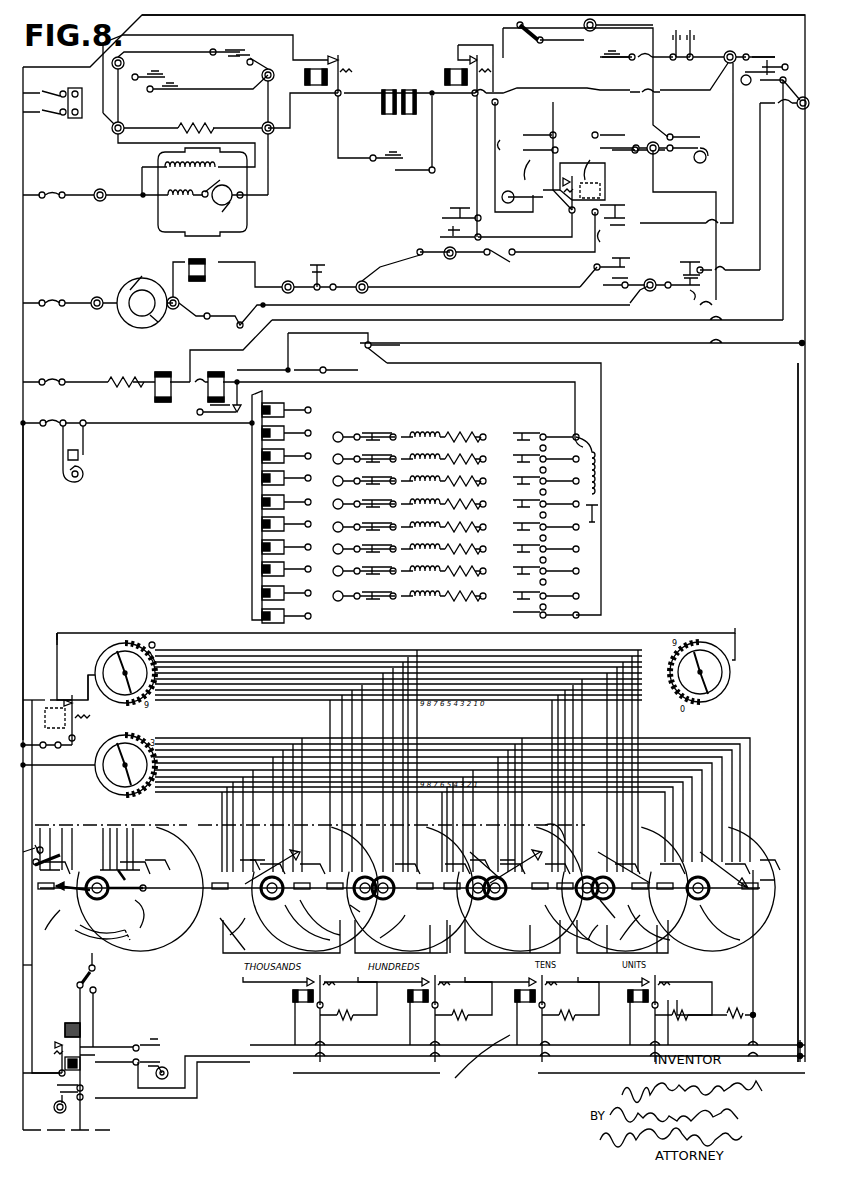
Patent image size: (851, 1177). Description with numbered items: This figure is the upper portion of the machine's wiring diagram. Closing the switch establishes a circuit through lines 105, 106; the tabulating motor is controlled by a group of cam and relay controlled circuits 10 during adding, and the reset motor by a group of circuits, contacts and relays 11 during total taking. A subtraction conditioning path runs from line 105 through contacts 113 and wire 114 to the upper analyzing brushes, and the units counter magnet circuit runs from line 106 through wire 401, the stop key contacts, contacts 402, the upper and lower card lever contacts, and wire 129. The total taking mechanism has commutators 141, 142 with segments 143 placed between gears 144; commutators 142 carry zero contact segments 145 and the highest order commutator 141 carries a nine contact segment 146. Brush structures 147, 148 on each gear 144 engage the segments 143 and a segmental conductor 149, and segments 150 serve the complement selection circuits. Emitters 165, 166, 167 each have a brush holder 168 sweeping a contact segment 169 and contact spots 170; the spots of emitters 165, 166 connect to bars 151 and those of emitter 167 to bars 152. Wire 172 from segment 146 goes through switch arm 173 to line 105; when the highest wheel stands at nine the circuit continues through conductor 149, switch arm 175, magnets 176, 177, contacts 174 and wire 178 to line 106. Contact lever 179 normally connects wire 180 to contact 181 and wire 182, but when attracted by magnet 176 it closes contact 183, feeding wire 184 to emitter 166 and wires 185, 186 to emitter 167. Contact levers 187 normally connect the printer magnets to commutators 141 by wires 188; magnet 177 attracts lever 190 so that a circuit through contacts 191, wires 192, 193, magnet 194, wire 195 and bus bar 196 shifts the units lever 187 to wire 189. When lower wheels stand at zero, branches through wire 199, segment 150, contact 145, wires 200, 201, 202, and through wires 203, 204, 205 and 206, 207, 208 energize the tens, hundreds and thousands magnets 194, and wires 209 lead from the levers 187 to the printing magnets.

The cam and relay controlled circuits 10 is at (435, 113).
The circuits, contacts and relays 11 is at (376, 276).
The line 105 is at (25, 585).
The line 106 is at (352, 10).
The contacts 113 is at (84, 478).
The wire 114 is at (143, 423).
The wire 129 is at (798, 520).
The commutators 141 is at (400, 908).
The commutators 142 is at (758, 933).
The segments 143 is at (145, 868).
The gears 144 is at (162, 940).
The zero contact segments 145 is at (653, 916).
The nine contact segment 146 is at (47, 918).
The brush structure 147 is at (74, 890).
The brush structure 148 is at (298, 876).
The segmental conductor 149 is at (715, 925).
The segment 150 is at (762, 896).
The bars 151 is at (240, 676).
The bars 152 is at (212, 752).
The emitter 165 is at (122, 642).
The emitter 166 is at (730, 642).
The emitter 167 is at (122, 745).
The brush holder 168 is at (150, 652).
The contact segment 169 is at (106, 652).
The contact spots 170 is at (152, 650).
The wire 172 is at (55, 855).
The switch arm 173 is at (50, 850).
The contacts 174 is at (93, 948).
The switch arm 175 is at (97, 970).
The magnet 176 is at (58, 700).
The magnet 177 is at (85, 1066).
The wire 178 is at (197, 1092).
The contact lever 179 is at (72, 731).
The wire 180 is at (58, 761).
The contact 181 is at (58, 700).
The wire 182 is at (88, 702).
The contact 183 is at (60, 712).
The wire 184 is at (68, 645).
The wire 185 is at (43, 955).
The wire 186 is at (40, 765).
The contact levers 187 is at (632, 1005).
The wires 188 is at (466, 988).
The wire 189 is at (683, 963).
The lever 190 is at (62, 1046).
The contacts 191 is at (160, 1053).
The wire 192 is at (226, 1046).
The wire 193 is at (702, 1015).
The magnet 194 is at (300, 1002).
The wire 195 is at (670, 1032).
The bus bar 196 is at (383, 1046).
The wire 199 is at (755, 965).
The wire 200 is at (625, 909).
The wire 201 is at (600, 1005).
The wire 202 is at (482, 1067).
The wire 203 is at (474, 946).
The wire 204 is at (490, 968).
The wire 205 is at (445, 1030).
The wire 206 is at (412, 962).
The wire 207 is at (424, 1002).
The wire 208 is at (308, 1024).
The wires 209 is at (325, 1075).
The wire 401 is at (731, 110).
The contacts 402 is at (541, 200).